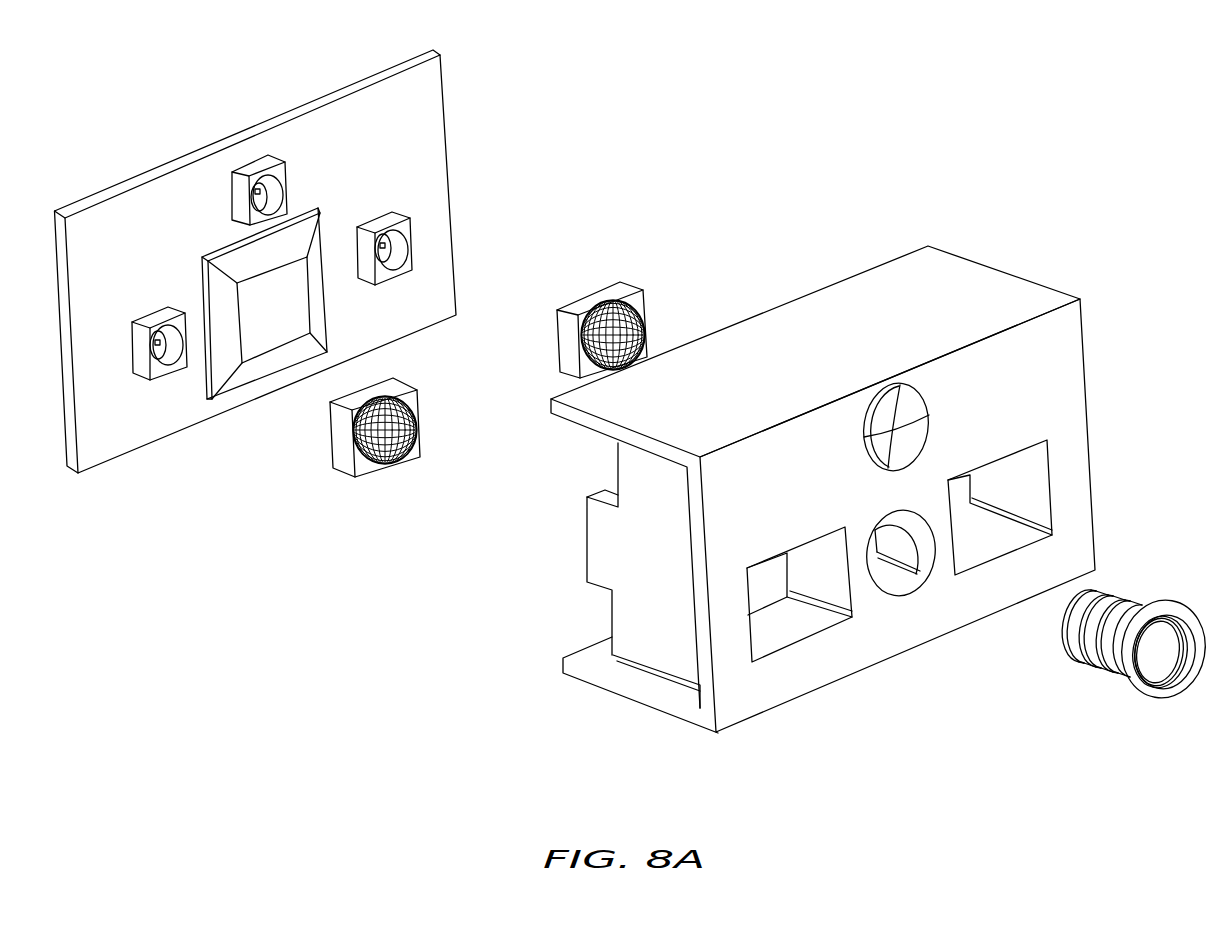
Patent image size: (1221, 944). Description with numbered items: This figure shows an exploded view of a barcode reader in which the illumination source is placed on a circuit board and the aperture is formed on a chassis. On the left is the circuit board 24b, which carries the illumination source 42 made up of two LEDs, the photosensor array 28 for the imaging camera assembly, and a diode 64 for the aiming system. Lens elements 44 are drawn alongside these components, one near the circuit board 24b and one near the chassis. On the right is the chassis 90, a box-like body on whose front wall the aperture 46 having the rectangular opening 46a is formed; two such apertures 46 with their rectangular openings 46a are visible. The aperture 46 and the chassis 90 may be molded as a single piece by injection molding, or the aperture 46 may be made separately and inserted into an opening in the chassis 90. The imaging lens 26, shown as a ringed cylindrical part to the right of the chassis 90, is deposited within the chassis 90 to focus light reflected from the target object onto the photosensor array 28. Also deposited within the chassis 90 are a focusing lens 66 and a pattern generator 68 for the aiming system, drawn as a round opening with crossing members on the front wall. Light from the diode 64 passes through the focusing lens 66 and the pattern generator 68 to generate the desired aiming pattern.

The circuit board 24b is at (406, 62).
The photosensor array 28 is at (219, 250).
The illumination source 42 is at (383, 246).
The lens 44 is at (420, 412).
The aperture 46 is at (834, 528).
The rectangular opening 46a is at (798, 632).
The diode 64 is at (262, 193).
The focusing lens 66 is at (921, 392).
The pattern generator 68 is at (915, 436).
The chassis 90 is at (1004, 270).
The imaging lens 26 is at (1148, 698).